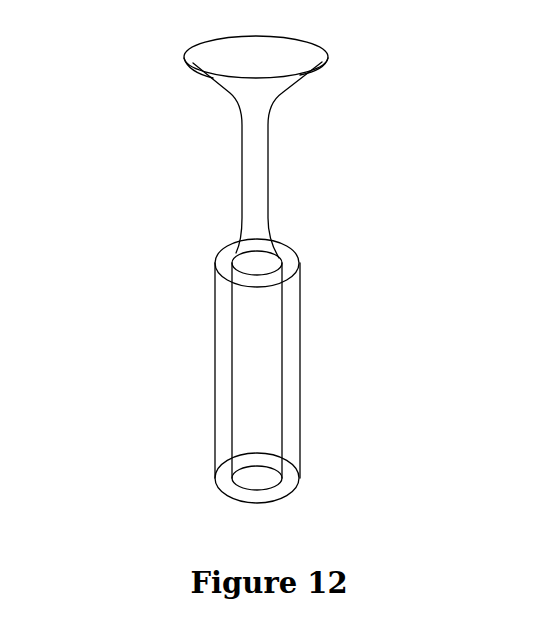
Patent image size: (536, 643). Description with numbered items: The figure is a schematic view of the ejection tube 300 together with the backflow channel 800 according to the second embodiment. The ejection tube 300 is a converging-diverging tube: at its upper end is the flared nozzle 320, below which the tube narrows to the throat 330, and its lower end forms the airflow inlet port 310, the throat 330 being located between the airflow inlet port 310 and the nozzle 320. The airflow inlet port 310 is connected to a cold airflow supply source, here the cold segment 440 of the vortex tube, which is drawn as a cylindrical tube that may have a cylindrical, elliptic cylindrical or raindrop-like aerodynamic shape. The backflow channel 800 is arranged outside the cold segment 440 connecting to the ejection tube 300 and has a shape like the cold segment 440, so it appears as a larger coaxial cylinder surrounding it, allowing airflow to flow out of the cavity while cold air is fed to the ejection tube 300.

The ejection tube 300 is at (293, 180).
The nozzle 320 is at (200, 62).
The throat 330 is at (240, 132).
The airflow inlet port 310 is at (232, 265).
The backflow channel 800 is at (300, 398).
The cold segment 440 is at (243, 432).